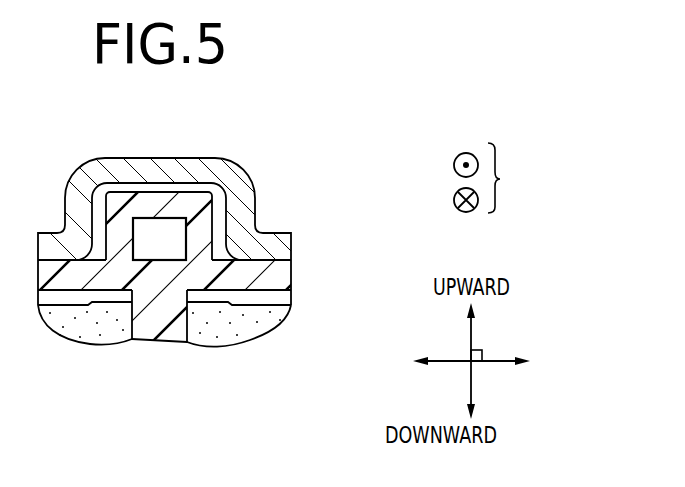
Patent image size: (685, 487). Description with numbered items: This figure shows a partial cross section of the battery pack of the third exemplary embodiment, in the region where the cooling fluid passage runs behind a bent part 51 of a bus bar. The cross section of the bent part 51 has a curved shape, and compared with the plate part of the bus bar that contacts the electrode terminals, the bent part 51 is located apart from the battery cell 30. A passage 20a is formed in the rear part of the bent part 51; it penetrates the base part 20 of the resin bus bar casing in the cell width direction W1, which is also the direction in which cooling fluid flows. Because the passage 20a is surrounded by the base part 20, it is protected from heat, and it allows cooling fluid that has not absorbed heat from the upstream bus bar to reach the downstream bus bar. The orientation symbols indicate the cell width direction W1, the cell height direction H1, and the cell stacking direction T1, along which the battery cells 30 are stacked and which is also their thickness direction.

The base part 20 is at (198, 225).
The passage 20a is at (150, 230).
The bent part 51 is at (172, 170).
The battery cells 30 is at (107, 329).
The cell width direction W1 is at (500, 179).
The cell height direction H1 is at (472, 340).
The cell stacking direction T1 is at (497, 364).